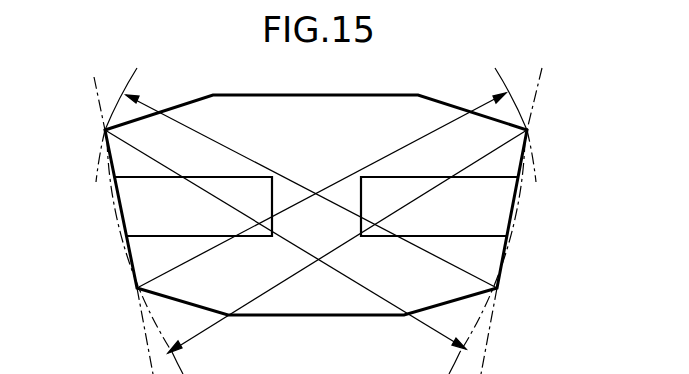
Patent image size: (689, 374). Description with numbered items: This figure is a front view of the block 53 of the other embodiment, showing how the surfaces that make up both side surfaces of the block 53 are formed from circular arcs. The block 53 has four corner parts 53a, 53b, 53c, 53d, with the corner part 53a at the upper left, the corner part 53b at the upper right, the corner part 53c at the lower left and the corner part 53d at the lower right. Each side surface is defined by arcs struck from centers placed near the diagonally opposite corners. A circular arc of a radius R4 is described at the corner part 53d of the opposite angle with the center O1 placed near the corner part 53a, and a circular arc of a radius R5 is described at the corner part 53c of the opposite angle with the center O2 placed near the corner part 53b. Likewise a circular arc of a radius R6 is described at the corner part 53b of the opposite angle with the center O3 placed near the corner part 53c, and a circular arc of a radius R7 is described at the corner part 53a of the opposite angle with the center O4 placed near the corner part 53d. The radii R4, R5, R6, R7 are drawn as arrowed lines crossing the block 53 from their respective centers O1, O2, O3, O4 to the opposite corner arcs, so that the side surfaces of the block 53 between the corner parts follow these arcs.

The block 53 is at (373, 94).
The corner part 53a is at (103, 134).
The corner part 53b is at (530, 135).
The corner part 53c is at (135, 287).
The corner part 53d is at (500, 286).
The center O1 is at (103, 131).
The center O2 is at (530, 131).
The center O3 is at (136, 290).
The center O4 is at (500, 290).
The radius R4 is at (285, 239).
The radius R5 is at (347, 241).
The radius R6 is at (321, 190).
The radius R7 is at (311, 191).